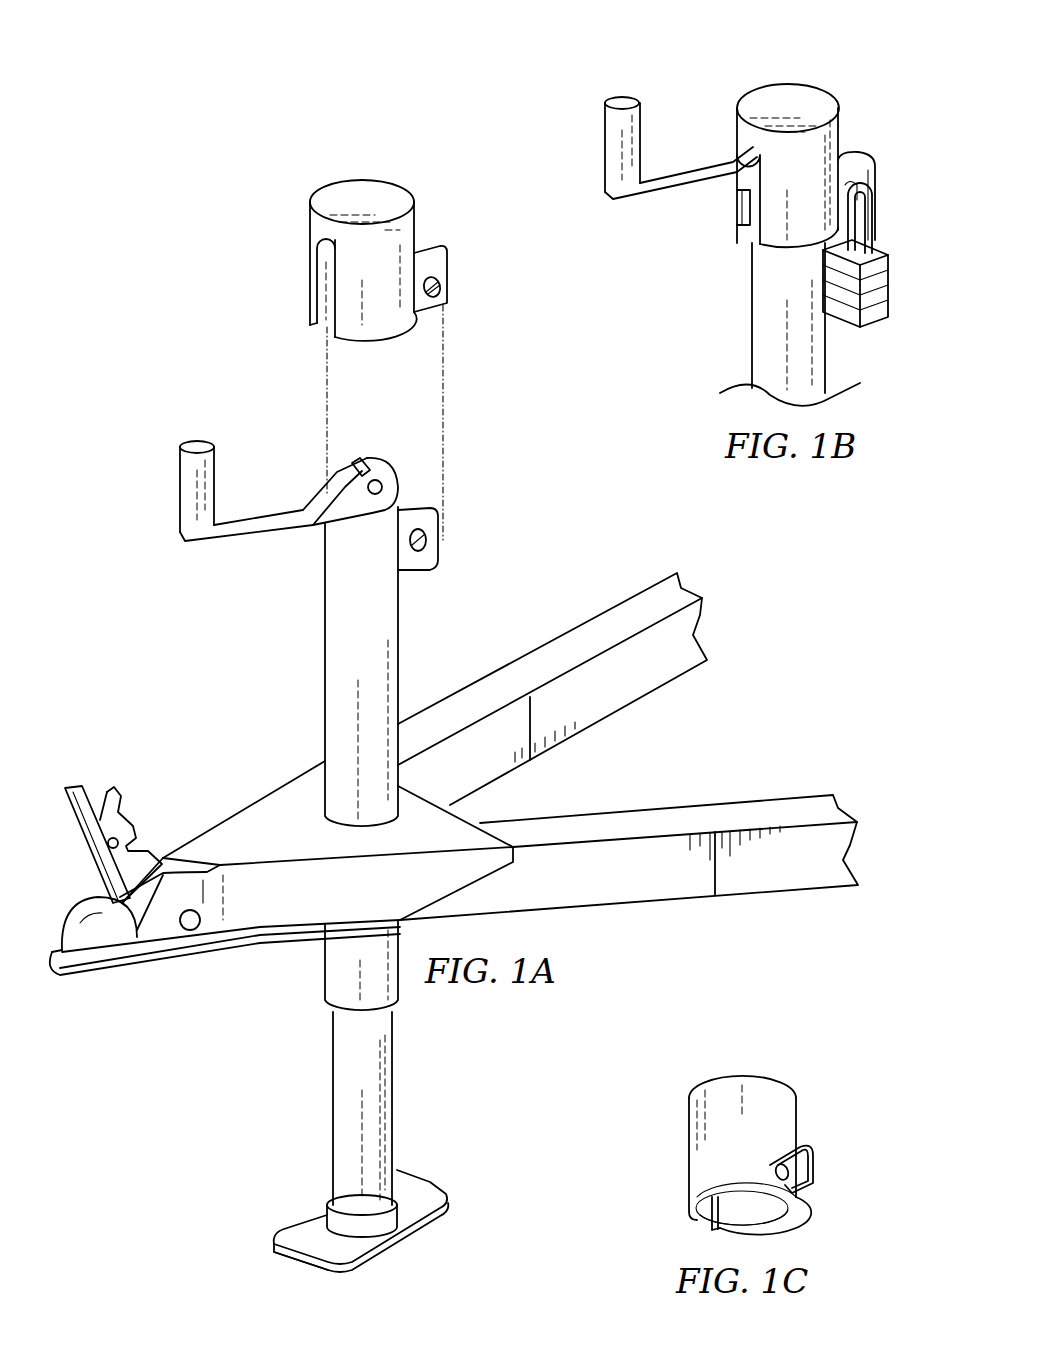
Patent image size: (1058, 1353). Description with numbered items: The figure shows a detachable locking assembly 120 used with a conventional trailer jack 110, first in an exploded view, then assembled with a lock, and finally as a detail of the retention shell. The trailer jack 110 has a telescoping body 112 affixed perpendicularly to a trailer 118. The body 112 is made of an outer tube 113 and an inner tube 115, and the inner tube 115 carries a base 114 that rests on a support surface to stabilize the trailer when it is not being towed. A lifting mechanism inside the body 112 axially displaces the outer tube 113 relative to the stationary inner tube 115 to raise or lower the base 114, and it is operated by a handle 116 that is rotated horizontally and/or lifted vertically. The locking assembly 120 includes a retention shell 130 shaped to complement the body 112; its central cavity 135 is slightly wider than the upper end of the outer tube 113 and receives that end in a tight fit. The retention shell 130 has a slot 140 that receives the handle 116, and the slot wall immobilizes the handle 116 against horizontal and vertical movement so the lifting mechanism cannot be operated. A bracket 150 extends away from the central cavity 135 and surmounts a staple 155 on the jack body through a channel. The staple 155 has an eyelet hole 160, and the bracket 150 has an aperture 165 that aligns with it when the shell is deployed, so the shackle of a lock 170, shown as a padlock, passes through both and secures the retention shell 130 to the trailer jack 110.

In FIG. 1A, the trailer jack 110 is at (167, 594).
In FIG. 1A, the telescoping body 112 is at (308, 728).
In FIG. 1A, the outer tube 113 is at (335, 634).
In FIG. 1B, the outer tube 113 is at (763, 315).
In FIG. 1A, the base 114 is at (298, 1205).
In FIG. 1A, the inner tube 115 is at (340, 1075).
In FIG. 1A, the handle 116 is at (190, 472).
In FIG. 1B, the handle 116 is at (613, 122).
In FIG. 1A, the trailer 118 is at (152, 932).
In FIG. 1B, the locking assembly 120 is at (868, 137).
In FIG. 1A, the retention shell 130 is at (360, 192).
In FIG. 1B, the retention shell 130 is at (803, 97).
In FIG. 1C, the retention shell 130 is at (727, 1090).
In FIG. 1C, the central cavity 135 is at (762, 1218).
In FIG. 1A, the slot 140 is at (312, 290).
In FIG. 1B, the slot 140 is at (733, 203).
In FIG. 1C, the slot 140 is at (707, 1220).
In FIG. 1A, the bracket 150 is at (432, 255).
In FIG. 1B, the bracket 150 is at (863, 160).
In FIG. 1C, the bracket 150 is at (813, 1148).
In FIG. 1A, the staple 155 is at (430, 570).
In FIG. 1A, the eyelet hole 160 is at (438, 545).
In FIG. 1A, the aperture 165 is at (445, 290).
In FIG. 1C, the aperture 165 is at (777, 1163).
In FIG. 1B, the lock 170 is at (873, 313).